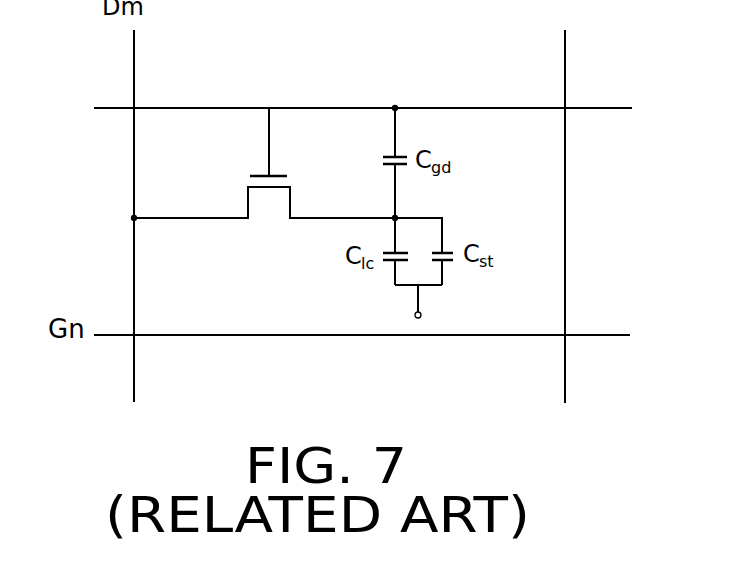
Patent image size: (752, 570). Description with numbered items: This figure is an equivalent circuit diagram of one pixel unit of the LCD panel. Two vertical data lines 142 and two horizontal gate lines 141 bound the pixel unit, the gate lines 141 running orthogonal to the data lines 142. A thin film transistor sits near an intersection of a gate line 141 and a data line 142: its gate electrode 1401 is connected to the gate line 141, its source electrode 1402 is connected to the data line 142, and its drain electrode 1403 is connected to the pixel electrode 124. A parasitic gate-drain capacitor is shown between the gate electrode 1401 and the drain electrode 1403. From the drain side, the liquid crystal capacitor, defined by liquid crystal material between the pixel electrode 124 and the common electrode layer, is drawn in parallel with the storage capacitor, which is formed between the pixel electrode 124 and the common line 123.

The gate line 141 is at (588, 108).
The data line 142 is at (565, 62).
The gate electrode 1401 is at (270, 142).
The source electrode 1402 is at (217, 220).
The drain electrode 1403 is at (317, 220).
The pixel electrode 124 is at (449, 252).
The common line 123 is at (450, 261).